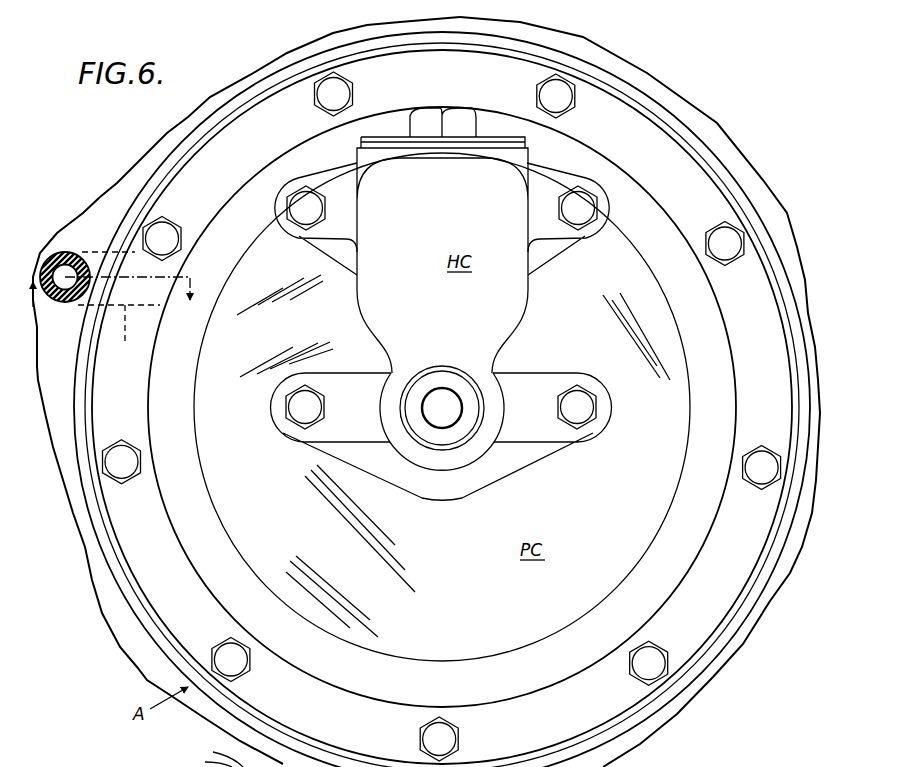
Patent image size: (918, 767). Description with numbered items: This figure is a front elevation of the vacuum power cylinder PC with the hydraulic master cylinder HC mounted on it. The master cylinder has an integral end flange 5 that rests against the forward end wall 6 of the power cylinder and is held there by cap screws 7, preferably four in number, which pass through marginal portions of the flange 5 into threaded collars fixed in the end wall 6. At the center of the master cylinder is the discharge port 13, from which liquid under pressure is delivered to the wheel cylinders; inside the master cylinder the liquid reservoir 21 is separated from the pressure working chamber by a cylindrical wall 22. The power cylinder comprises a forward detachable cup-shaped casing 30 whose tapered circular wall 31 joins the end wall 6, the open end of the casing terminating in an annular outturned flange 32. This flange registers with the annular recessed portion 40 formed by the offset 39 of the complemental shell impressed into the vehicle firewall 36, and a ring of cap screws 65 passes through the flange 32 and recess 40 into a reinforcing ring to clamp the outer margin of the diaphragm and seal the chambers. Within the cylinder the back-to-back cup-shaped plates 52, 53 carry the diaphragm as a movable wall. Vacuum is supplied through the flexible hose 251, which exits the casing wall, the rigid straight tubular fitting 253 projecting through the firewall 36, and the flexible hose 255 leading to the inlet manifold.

The end flange 5 is at (537, 353).
The forward end wall 6 is at (534, 617).
The cap screws 7 is at (303, 218).
The discharge port 13 is at (430, 420).
The liquid reservoir 21 is at (528, 301).
The cylindrical wall 22 is at (478, 460).
The forward detachable cup-shaped casing 30 is at (579, 657).
The tapered circular wall 31 is at (648, 584).
The annular outturned flange 32 is at (632, 130).
The vehicle firewall 36 is at (136, 170).
The offset 39 is at (724, 166).
The annular recessed portion 40 is at (770, 248).
The cup-shaped plate 52 is at (208, 759).
The cup-shaped plate 53 is at (219, 750).
The cap screws 65 is at (764, 474).
The flexible hose 251 is at (119, 309).
The rigid straight tubular fitting 253 is at (75, 259).
The flexible hose 255 is at (70, 304).